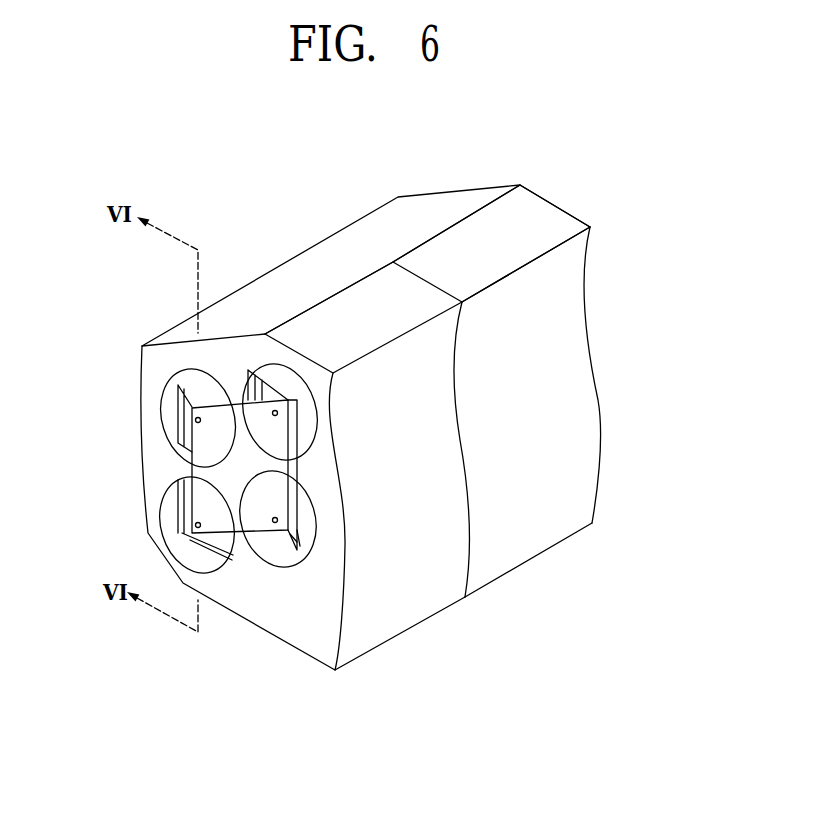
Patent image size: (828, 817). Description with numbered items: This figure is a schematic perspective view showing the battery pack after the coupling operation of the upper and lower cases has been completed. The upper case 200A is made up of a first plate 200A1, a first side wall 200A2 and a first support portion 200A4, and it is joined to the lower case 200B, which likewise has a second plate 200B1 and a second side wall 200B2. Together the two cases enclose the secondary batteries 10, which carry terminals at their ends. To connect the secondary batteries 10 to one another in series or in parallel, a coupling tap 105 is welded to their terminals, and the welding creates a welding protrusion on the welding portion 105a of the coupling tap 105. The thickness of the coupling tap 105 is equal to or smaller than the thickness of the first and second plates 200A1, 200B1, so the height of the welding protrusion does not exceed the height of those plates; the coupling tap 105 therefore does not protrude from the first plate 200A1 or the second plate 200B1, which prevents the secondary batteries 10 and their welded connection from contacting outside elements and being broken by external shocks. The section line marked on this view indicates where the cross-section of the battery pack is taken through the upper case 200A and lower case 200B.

The upper case 200A is at (430, 633).
The first plate 200A1 is at (157, 373).
The first side wall 200A2 is at (253, 300).
The first support portion 200A4 is at (278, 547).
The lower case 200B is at (558, 557).
The second plate 200B1 is at (602, 453).
The second side wall 200B2 is at (373, 227).
The coupling tap 105 is at (223, 475).
The welding portion 105a is at (188, 550).
The secondary battery 10 is at (288, 552).